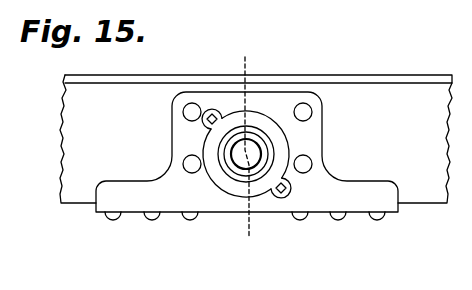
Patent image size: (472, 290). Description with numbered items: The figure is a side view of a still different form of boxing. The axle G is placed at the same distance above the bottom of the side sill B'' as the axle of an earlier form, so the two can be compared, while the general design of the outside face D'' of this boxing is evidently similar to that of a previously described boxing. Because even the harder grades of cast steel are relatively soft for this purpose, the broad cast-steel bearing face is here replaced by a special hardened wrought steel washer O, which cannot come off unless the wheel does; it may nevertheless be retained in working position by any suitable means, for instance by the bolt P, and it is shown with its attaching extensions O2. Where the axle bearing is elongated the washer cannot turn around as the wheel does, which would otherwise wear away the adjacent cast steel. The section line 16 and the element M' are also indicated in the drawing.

The section line 16 is at (244, 145).
The hardened wrought steel washer O is at (207, 141).
The attaching extension O2 is at (290, 187).
The axle G is at (233, 160).
The bearing bushing M' is at (269, 204).
The bolt P is at (287, 195).
The side sill B'' is at (256, 139).
The outside face D'' is at (247, 175).